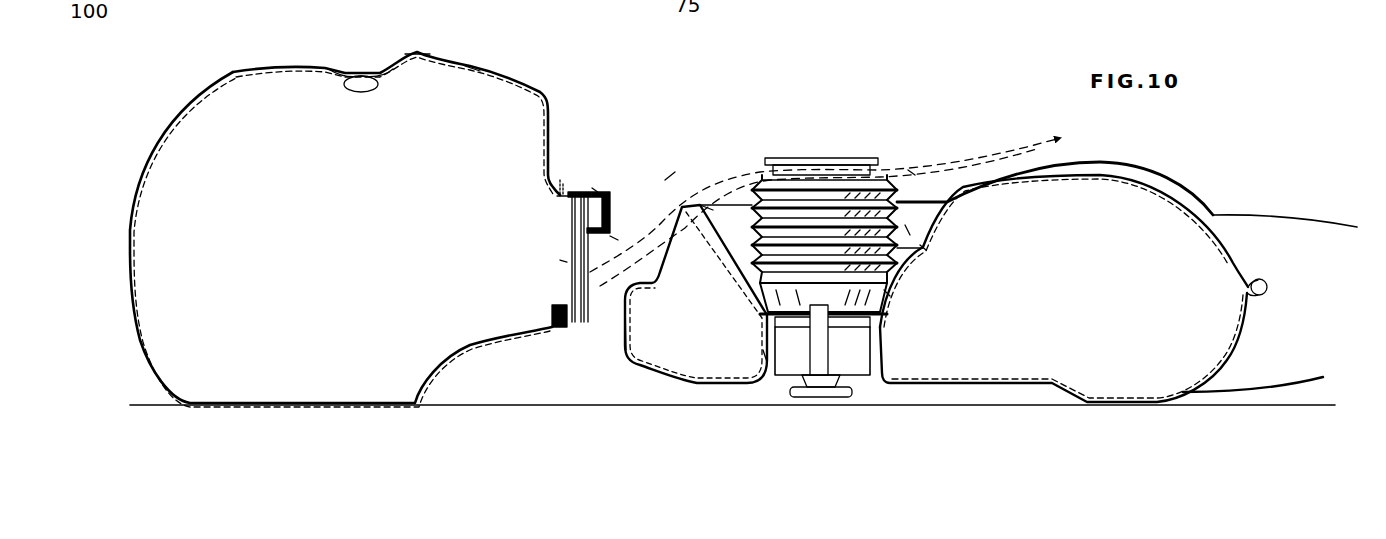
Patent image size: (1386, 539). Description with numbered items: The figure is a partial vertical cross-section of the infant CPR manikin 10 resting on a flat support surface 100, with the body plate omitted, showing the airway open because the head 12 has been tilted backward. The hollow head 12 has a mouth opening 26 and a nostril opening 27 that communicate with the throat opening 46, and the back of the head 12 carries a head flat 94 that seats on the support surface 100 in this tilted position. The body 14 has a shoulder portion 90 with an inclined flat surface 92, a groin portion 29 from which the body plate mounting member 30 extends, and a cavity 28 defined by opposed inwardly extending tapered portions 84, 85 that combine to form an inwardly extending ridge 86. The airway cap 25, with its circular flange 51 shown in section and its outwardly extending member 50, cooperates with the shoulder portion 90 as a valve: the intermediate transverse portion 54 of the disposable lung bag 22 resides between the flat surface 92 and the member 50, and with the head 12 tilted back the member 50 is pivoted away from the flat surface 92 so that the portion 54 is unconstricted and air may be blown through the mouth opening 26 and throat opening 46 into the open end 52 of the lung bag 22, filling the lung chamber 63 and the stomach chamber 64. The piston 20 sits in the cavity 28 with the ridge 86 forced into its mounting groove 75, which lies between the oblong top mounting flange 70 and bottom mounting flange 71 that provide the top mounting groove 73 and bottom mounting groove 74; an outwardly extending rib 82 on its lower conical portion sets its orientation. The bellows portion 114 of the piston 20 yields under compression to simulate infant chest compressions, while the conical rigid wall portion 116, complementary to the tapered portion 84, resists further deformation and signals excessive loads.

The infant CPR manikin 10 is at (837, 240).
The head 12 is at (232, 66).
The body 14 is at (1146, 163).
The piston 20 is at (792, 148).
The disposable lung bag 22 is at (908, 170).
The airway cap 25 is at (593, 186).
The mouth opening 26 is at (473, 72).
The nostril opening 27 is at (417, 54).
The cavity 28 is at (907, 230).
The groin portion 29 is at (1237, 257).
The body plate mounting member 30 is at (1267, 280).
The throat opening 46 is at (567, 260).
The outwardly extending member 50 is at (618, 232).
The circular flange 51 is at (567, 330).
The open end 52 is at (566, 176).
The intermediate transverse portion 54 is at (618, 238).
The lung chamber 63 is at (670, 188).
The stomach chamber 64 is at (1035, 148).
The top mounting flange 70 is at (857, 162).
The bottom mounting flange 71 is at (847, 397).
The top mounting groove 73 is at (832, 157).
The bottom mounting groove 74 is at (803, 378).
The mounting groove 75 is at (768, 315).
The outwardly extending rib 82 is at (827, 362).
The inwardly extending tapered portion 84 is at (713, 207).
The inwardly extending tapered portion 85 is at (768, 357).
The inwardly extending ridge 86 is at (877, 327).
The shoulder portion 90 is at (652, 308).
The inclined flat surface 92 is at (633, 282).
The head flat 94 is at (265, 405).
The flat support surface 100 is at (151, 404).
The bellows portion 114 is at (923, 247).
The rigid wall portion 116 is at (887, 293).